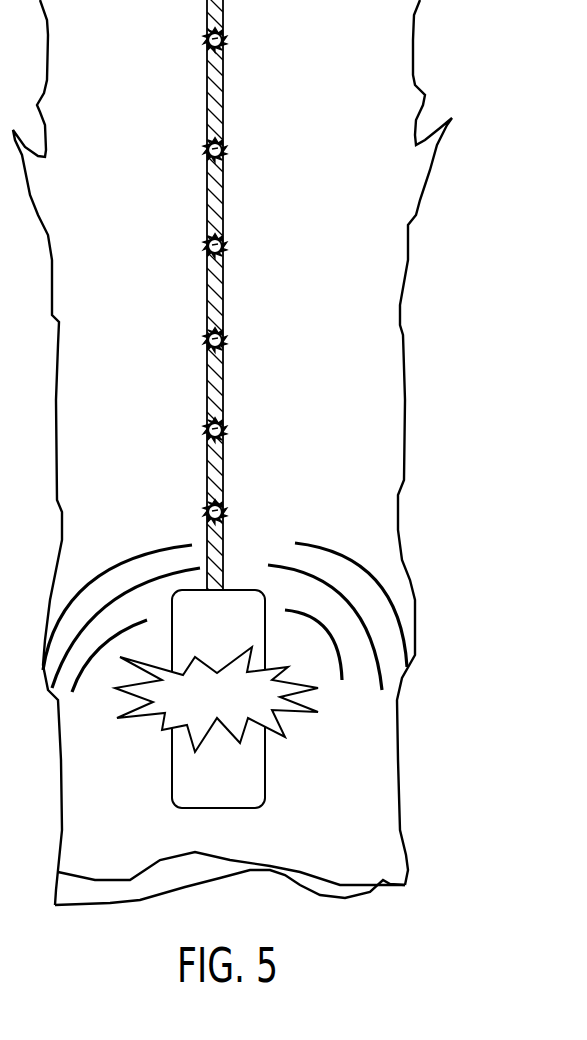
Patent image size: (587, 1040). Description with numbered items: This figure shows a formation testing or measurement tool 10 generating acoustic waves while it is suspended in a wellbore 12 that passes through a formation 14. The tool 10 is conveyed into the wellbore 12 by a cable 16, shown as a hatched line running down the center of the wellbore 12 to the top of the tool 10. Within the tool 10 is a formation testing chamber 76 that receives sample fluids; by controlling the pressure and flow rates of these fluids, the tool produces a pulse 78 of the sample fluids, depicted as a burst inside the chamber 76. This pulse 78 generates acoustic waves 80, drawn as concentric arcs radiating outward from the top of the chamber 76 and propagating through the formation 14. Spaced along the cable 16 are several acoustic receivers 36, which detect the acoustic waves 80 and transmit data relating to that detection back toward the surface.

The formation testing or measurement tool 10 is at (320, 742).
The wellbore 12 is at (410, 258).
The formation 14 is at (479, 400).
The cable 16 is at (223, 291).
The acoustic receivers 36 is at (203, 50).
The formation testing chamber 76 is at (265, 770).
The pulse 78 is at (162, 702).
The acoustic waves 80 is at (383, 568).